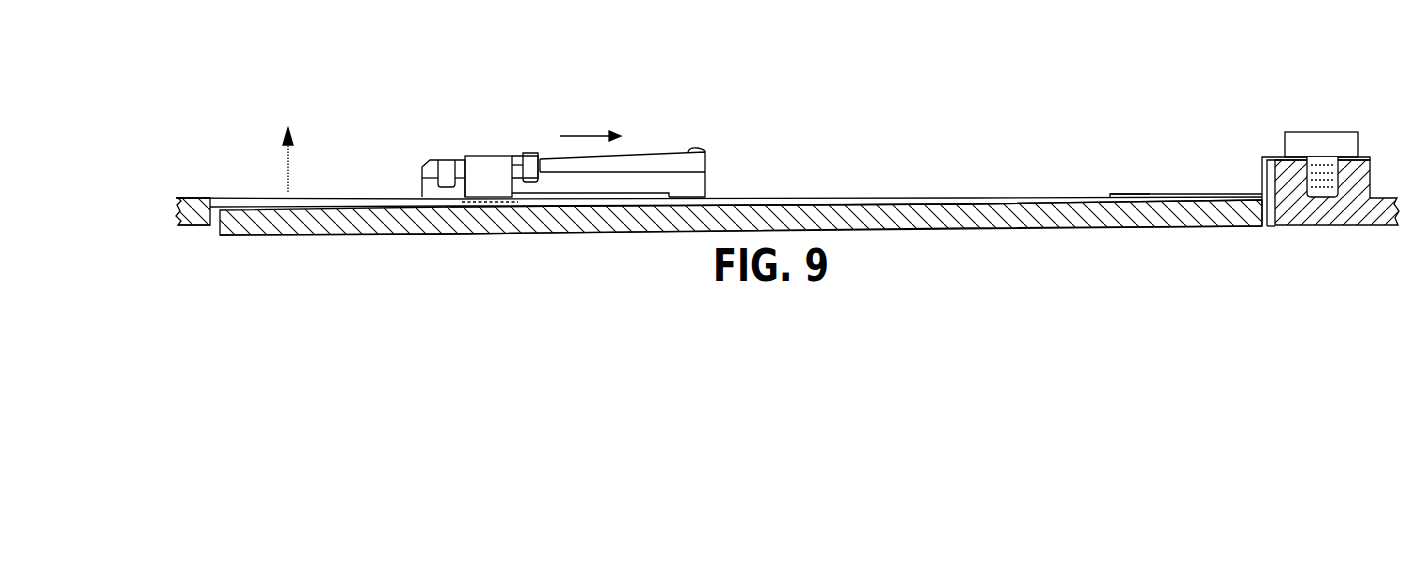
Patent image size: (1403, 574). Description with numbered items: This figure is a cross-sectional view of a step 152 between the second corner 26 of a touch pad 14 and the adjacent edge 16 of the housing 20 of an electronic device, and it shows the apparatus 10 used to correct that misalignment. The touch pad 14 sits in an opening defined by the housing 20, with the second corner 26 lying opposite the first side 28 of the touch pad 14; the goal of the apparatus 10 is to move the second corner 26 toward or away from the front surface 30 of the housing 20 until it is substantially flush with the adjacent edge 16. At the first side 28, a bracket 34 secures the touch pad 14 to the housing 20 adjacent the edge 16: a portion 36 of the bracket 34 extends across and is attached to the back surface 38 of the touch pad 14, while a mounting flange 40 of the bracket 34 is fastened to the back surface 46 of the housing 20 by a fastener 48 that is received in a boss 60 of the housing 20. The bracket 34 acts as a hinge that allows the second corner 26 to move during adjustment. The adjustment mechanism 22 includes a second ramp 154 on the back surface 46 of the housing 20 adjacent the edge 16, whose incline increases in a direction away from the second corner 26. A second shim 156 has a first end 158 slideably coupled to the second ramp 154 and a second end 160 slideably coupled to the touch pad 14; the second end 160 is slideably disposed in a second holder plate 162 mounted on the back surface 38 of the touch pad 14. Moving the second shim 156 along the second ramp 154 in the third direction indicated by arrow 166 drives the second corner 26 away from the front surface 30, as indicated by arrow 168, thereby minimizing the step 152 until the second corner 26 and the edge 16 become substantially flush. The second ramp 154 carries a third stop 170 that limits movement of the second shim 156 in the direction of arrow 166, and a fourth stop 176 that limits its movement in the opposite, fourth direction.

The apparatus 10 is at (553, 83).
The touch pad 14 is at (972, 229).
The edge 16 is at (217, 203).
The housing 20 is at (208, 199).
The adjustment mechanism 22 is at (674, 136).
The second corner 26 is at (232, 212).
The first side 28 is at (1270, 228).
The front surface 30 is at (187, 226).
The bracket 34 is at (1142, 186).
The portion 36 is at (1206, 194).
The back surface 38 is at (970, 217).
The mounting flange 40 is at (1272, 156).
The back surface 46 is at (192, 198).
The fastener 48 is at (1322, 132).
The boss 60 is at (1371, 178).
The step 152 is at (221, 235).
The second ramp 154 is at (638, 144).
The second shim 156 is at (487, 146).
The first end 158 is at (530, 153).
The second end 160 is at (518, 205).
The second holder plate 162 is at (603, 200).
The arrow 166 is at (589, 135).
The arrow 168 is at (290, 157).
The third stop 170 is at (702, 150).
The fourth stop 176 is at (428, 162).